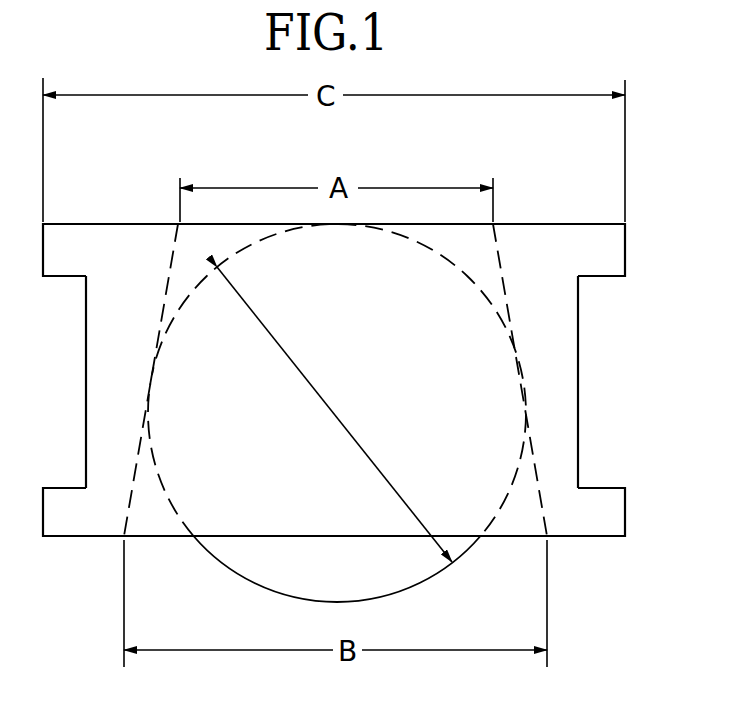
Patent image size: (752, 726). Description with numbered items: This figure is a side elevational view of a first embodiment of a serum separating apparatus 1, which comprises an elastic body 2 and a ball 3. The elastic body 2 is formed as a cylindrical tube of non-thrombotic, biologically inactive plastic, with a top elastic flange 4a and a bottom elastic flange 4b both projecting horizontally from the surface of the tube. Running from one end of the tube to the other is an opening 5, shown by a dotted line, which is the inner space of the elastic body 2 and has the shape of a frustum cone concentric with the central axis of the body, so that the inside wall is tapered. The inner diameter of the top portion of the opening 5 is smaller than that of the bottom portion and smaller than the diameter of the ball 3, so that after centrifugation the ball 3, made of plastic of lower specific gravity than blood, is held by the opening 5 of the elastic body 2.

The serum separating apparatus 1 is at (667, 313).
The elastic body 2 is at (578, 322).
The ball 3 is at (507, 488).
The top elastic flange 4a is at (605, 258).
The bottom elastic flange 4b is at (605, 519).
The opening 5 is at (167, 536).